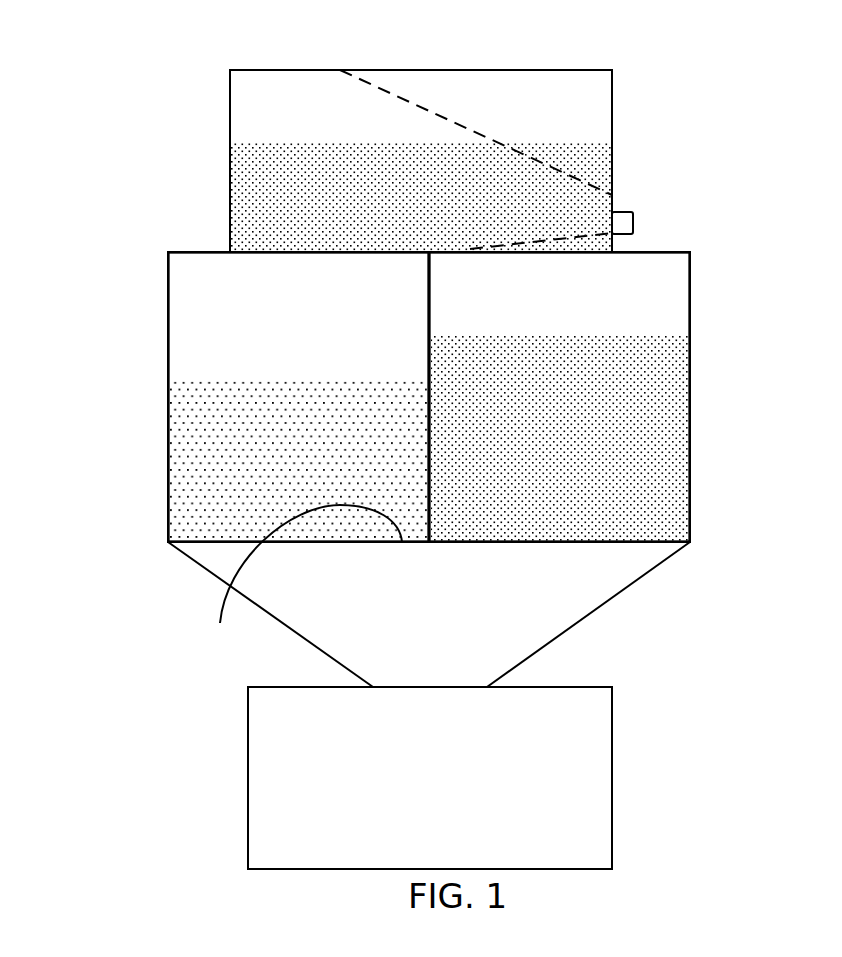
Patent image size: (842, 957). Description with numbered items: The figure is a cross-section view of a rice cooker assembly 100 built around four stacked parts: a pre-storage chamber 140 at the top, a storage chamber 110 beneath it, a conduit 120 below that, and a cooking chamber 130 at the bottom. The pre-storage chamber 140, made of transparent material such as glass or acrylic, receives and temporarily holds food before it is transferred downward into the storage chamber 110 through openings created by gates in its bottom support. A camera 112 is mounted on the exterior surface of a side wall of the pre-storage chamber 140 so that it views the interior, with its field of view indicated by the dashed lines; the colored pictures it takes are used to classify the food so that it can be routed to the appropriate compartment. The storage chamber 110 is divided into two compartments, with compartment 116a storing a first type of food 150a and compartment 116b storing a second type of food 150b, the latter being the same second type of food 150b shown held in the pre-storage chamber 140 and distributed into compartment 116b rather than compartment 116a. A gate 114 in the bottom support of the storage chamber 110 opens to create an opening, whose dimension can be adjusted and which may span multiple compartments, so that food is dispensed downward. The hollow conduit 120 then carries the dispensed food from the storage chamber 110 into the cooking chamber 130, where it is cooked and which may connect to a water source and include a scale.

The rice cooker assembly 100 is at (69, 27).
The storage chamber 110 is at (168, 283).
The camera 112 is at (620, 212).
The gate 114 is at (303, 580).
The compartment 116a is at (232, 286).
The compartment 116b is at (494, 285).
The conduit 120 is at (575, 578).
The cooking chamber 130 is at (320, 736).
The pre-storage chamber 140 is at (300, 117).
The first type of food 150a is at (329, 472).
The second type of food 150b is at (450, 209).